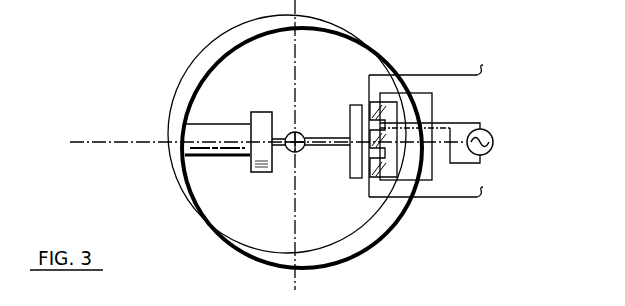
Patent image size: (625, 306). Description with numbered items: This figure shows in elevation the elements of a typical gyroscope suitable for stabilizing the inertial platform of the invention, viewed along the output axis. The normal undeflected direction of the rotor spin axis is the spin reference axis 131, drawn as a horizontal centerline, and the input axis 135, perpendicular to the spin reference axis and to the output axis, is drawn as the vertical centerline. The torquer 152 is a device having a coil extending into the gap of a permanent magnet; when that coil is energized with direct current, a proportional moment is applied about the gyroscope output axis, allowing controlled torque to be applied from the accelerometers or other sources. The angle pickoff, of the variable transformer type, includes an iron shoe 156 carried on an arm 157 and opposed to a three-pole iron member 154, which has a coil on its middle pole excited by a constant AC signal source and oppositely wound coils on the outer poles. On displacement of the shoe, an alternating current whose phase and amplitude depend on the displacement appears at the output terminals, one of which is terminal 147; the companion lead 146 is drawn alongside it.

The spin reference axis 131 is at (160, 142).
The input axis 135 is at (298, 6).
The lead wire 146 is at (463, 199).
The terminal 147 is at (463, 77).
The torquer 152 is at (224, 116).
The 3-pole iron member 154 is at (388, 114).
The iron shoe 156 is at (356, 104).
The arm 157 is at (332, 138).